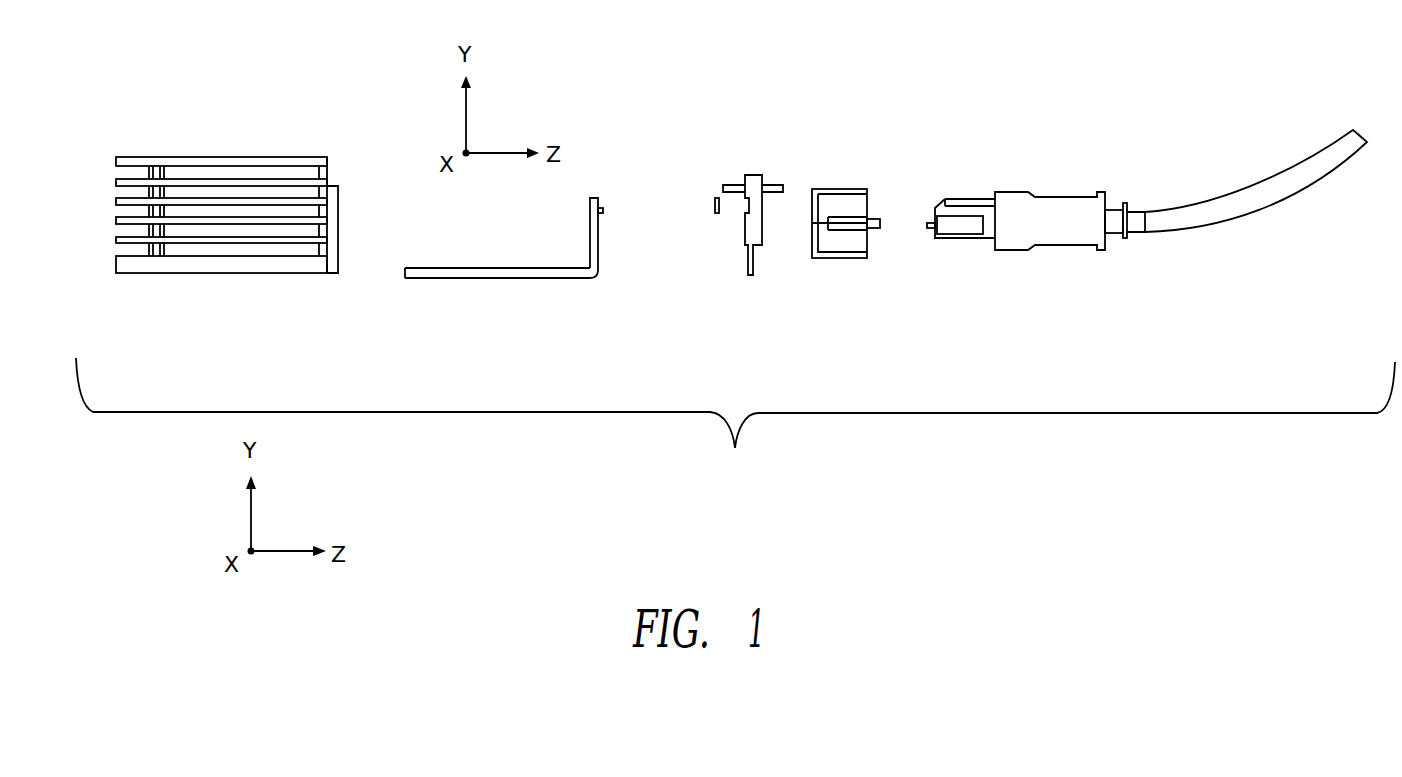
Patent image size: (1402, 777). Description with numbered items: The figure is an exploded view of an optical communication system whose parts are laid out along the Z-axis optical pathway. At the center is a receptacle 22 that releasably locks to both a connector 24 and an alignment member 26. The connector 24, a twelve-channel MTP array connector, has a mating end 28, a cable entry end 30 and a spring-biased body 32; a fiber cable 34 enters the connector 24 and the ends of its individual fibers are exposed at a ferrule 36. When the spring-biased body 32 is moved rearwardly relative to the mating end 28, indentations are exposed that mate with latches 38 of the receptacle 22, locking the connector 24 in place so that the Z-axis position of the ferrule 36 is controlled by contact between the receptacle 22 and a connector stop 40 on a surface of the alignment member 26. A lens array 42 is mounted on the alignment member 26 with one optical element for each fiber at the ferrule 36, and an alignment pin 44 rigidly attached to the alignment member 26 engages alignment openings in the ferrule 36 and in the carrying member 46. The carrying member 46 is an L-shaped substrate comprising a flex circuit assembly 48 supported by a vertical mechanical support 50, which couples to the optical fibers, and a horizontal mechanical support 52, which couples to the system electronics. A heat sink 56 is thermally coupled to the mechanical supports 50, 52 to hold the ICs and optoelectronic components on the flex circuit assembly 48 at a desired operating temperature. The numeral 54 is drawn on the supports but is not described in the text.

The receptacle 22 is at (873, 187).
The connector 24 is at (1131, 199).
The alignment member 26 is at (747, 165).
The mating end 28 is at (968, 240).
The cable entry end 30 is at (1113, 237).
The spring-biased body 32 is at (1063, 250).
The fiber cable 34 is at (1263, 212).
The ferrule 36 is at (927, 225).
The latches 38 is at (873, 219).
The connector stop 40 is at (762, 227).
The lens array 42 is at (713, 207).
The alignment pin 44 is at (737, 186).
The carrying member 46 is at (538, 254).
The flex circuit assembly 48 is at (602, 276).
The mechanical support 50 is at (590, 245).
The mechanical support 52 is at (468, 267).
The contact bump 54 is at (606, 210).
The heat sink 56 is at (222, 157).